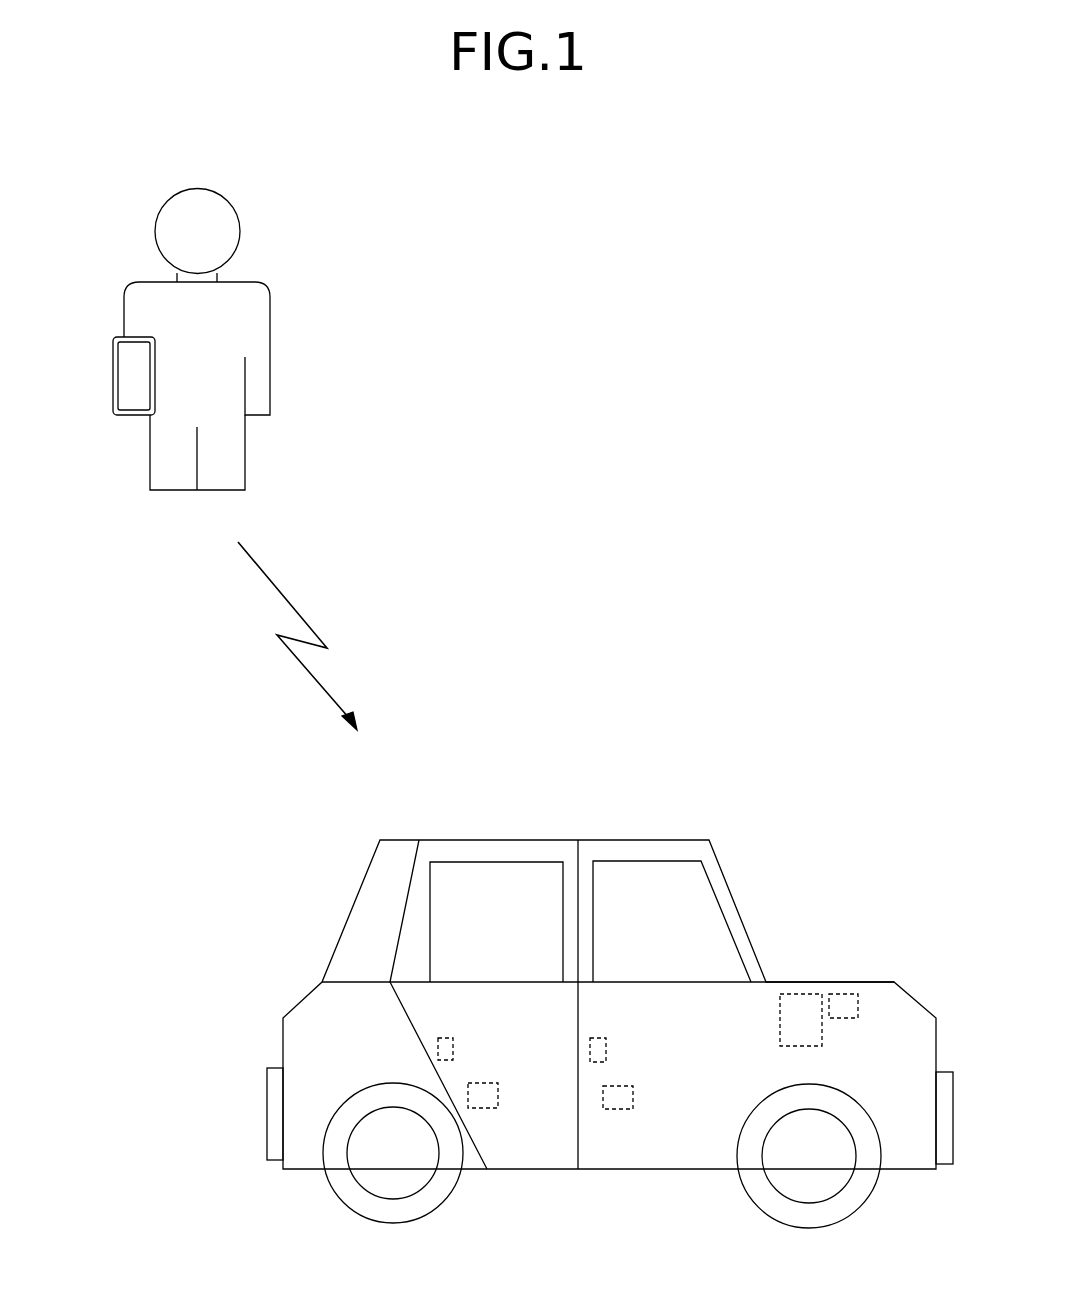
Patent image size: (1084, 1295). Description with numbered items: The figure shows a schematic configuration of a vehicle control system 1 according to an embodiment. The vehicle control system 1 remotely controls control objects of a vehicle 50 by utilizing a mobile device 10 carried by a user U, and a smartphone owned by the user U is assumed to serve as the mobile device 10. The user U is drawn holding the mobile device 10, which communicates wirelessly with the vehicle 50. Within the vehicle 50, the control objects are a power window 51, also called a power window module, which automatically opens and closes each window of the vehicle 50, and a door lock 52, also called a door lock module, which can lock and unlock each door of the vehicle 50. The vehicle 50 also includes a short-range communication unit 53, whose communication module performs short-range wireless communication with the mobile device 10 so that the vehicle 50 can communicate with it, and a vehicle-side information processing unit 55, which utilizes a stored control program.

The vehicle control system 1 is at (728, 193).
The user U is at (197, 189).
The mobile device 10 is at (113, 372).
The vehicle 50 is at (756, 864).
The power window 51 is at (500, 1101).
The door lock 52 is at (456, 1055).
The short-range communication unit 53 is at (846, 978).
The vehicle-side information processing unit 55 is at (796, 978).